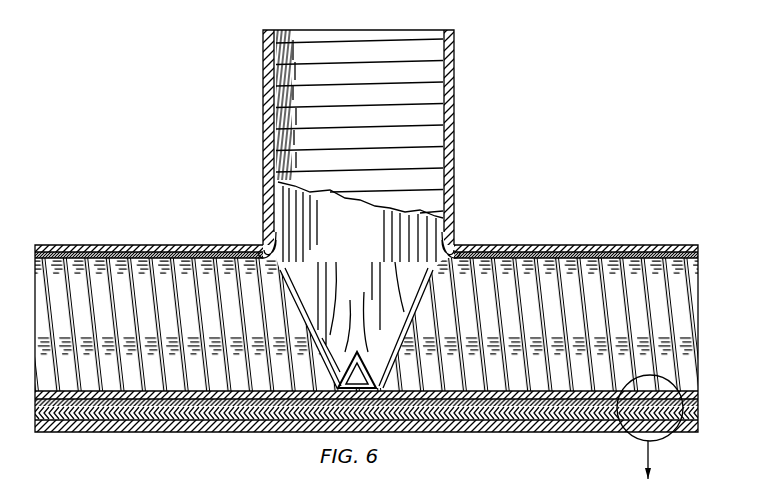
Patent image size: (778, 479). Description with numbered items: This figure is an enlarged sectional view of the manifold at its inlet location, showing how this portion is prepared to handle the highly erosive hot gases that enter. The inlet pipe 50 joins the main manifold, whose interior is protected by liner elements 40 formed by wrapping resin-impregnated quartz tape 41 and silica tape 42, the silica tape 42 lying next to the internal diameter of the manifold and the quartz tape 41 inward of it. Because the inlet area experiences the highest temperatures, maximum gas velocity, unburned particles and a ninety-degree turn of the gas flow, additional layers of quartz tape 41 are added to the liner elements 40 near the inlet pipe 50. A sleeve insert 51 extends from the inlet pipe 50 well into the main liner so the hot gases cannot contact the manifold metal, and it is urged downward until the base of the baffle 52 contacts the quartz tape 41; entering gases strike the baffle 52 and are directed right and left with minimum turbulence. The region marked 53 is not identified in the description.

The liner element 40 is at (218, 250).
The quartz tape 41 is at (110, 248).
The silica tape 42 is at (427, 57).
The inlet pipe 50 is at (452, 195).
The sleeve insert 51 is at (297, 205).
The baffle 52 is at (372, 364).
The weld joint 53 is at (343, 348).